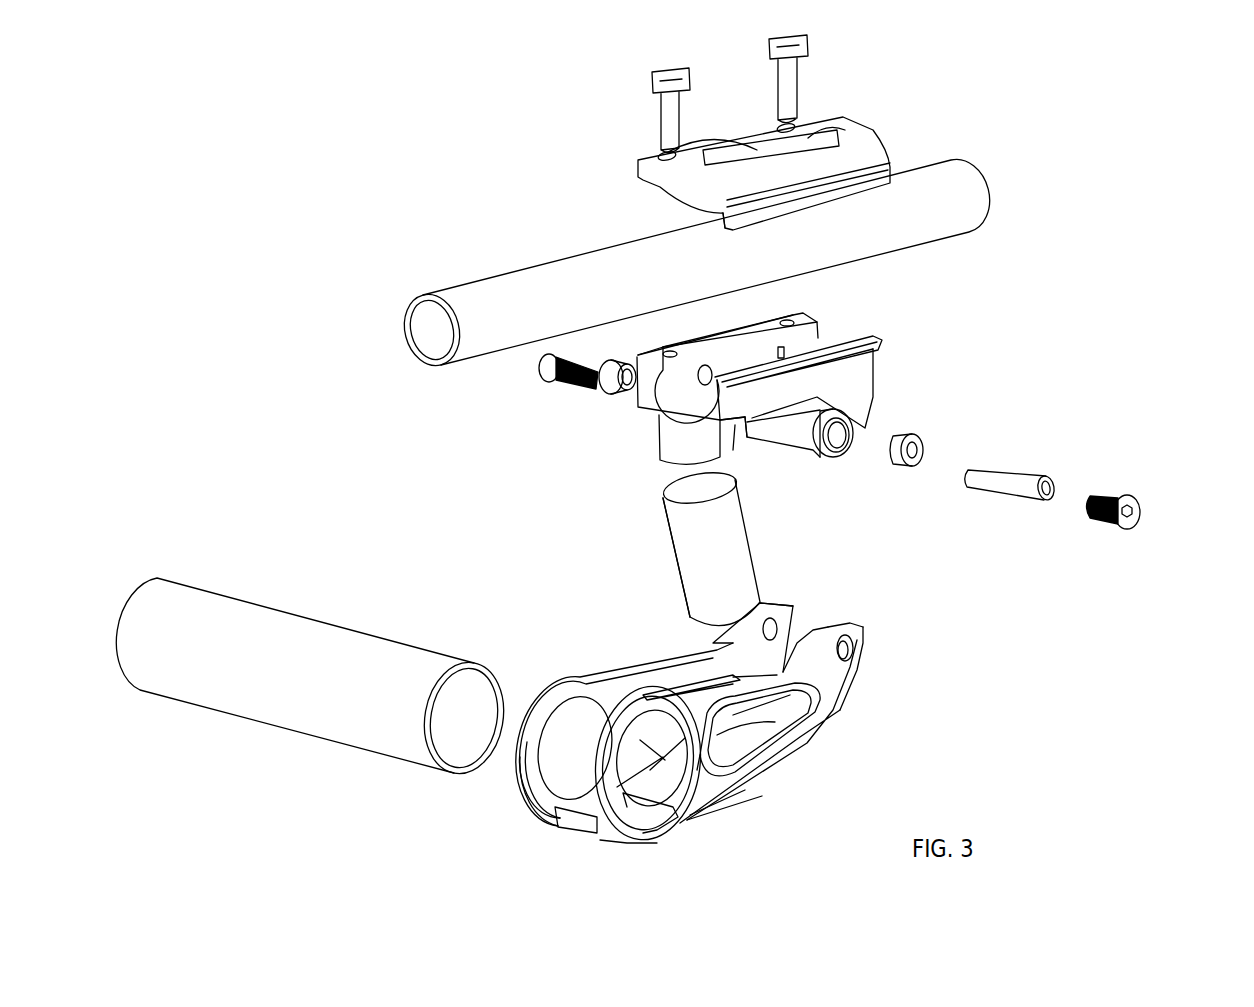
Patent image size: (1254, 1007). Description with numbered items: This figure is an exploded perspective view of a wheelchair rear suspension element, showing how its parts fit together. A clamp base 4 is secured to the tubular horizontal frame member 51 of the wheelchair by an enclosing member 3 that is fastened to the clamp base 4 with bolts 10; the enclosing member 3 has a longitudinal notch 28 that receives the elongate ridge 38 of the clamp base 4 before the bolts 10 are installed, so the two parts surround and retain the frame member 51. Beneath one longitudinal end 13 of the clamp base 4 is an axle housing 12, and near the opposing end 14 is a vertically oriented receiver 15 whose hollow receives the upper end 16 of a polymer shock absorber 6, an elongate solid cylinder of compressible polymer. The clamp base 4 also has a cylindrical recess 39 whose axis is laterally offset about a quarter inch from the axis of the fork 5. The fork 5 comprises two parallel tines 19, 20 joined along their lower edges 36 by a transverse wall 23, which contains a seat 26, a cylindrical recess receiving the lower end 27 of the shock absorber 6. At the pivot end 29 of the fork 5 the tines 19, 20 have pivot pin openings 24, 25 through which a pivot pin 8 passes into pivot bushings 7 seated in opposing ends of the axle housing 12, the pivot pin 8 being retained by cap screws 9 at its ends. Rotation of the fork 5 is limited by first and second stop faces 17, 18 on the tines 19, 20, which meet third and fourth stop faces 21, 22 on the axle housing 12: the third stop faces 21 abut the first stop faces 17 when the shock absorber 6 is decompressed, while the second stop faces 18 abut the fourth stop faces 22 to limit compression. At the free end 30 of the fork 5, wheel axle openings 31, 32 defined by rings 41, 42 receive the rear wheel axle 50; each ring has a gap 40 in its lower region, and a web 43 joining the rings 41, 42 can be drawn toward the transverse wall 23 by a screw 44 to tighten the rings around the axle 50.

The enclosing member 3 is at (843, 117).
The clamp base 4 is at (878, 363).
The fork 5 is at (705, 792).
The polymer shock absorber 6 is at (682, 587).
The pivot bushings 7 is at (598, 386).
The pivot pin 8 is at (1042, 477).
The cap screws 9 is at (555, 372).
The bolts 10 is at (660, 115).
The axle housing 12 is at (848, 447).
The longitudinal end 13 is at (873, 382).
The opposing end 14 is at (648, 393).
The receiver 15 is at (680, 447).
The upper end 16 is at (685, 497).
The first stop faces 17 is at (853, 626).
The second stop faces 18 is at (838, 623).
The tine 19 is at (673, 690).
The tine 20 is at (623, 685).
The third stop faces 21 is at (863, 427).
The fourth stop faces 22 is at (832, 437).
The transverse wall 23 is at (737, 792).
The pivot pin opening 24 is at (858, 672).
The pivot pin opening 25 is at (852, 624).
The seat 26 is at (743, 743).
The lower end 27 is at (688, 617).
The longitudinal notch 28 is at (720, 212).
The pivot end 29 is at (865, 637).
The free end 30 is at (523, 780).
The wheel axle opening 31 is at (647, 780).
The wheel axle opening 32 is at (573, 752).
The lower edge 36 is at (767, 773).
The elongate ridge 38 is at (872, 342).
The cylindrical recess 39 is at (810, 338).
The gap 40 is at (683, 820).
The ring 41 is at (610, 793).
The ring 42 is at (555, 700).
The web 43 is at (630, 812).
The screw 44 is at (613, 842).
The axle 50 is at (278, 677).
The horizontal frame member 51 is at (470, 283).